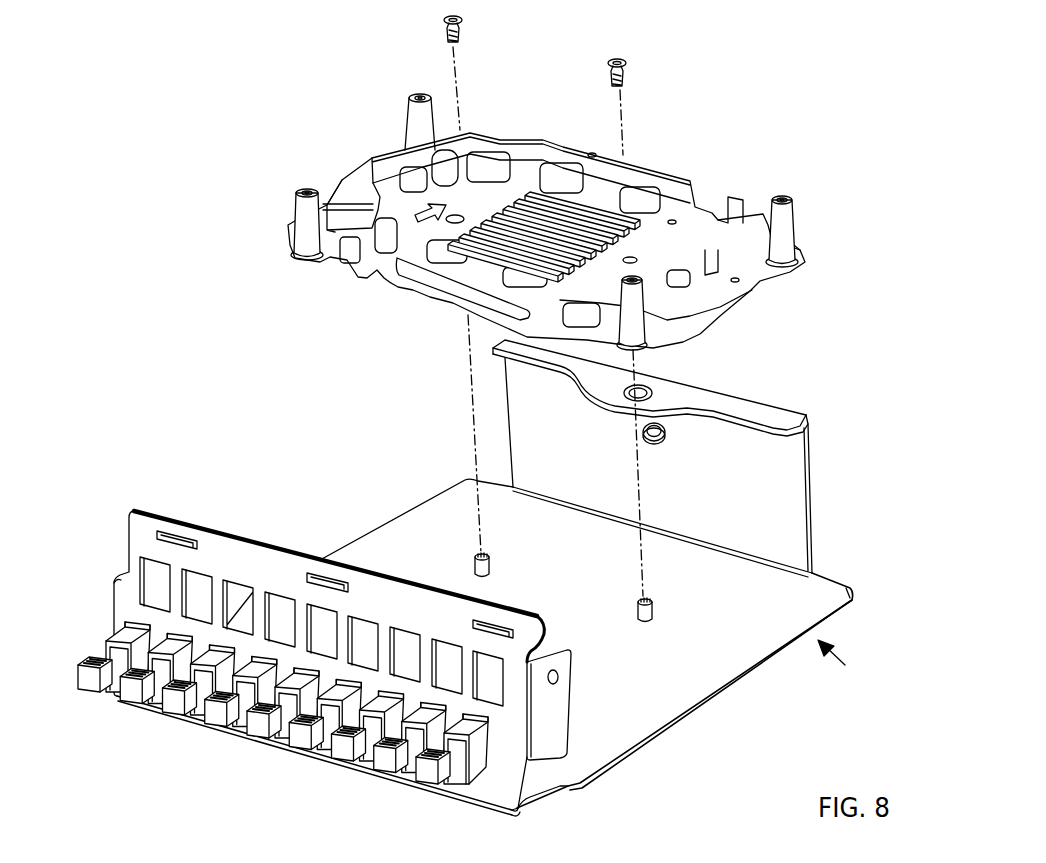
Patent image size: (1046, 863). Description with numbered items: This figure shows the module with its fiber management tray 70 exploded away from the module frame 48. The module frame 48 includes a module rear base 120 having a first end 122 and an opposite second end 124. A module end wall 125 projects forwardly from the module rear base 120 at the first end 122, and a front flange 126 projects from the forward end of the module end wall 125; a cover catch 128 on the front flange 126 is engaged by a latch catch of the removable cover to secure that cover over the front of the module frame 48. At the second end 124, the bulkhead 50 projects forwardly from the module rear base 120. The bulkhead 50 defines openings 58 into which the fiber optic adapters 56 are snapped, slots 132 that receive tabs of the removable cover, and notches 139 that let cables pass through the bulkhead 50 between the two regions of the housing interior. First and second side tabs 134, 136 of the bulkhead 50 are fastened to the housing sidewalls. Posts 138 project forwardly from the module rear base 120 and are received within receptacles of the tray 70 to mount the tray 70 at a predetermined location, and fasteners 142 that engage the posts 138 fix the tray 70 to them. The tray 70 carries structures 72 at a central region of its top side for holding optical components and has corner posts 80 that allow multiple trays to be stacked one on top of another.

The module frame 48 is at (847, 669).
The bulkhead 50 is at (135, 545).
The fiber optic adapters 56 is at (473, 770).
The openings 58 is at (140, 576).
The tray 70 is at (668, 190).
The structures 72 is at (537, 218).
The corner posts 80 is at (410, 100).
The module rear base 120 is at (463, 597).
The first end 122 is at (838, 588).
The second end 124 is at (520, 808).
The module end wall 125 is at (815, 455).
The front flange 126 is at (777, 418).
The cover catch 128 is at (648, 393).
The slots 132 is at (172, 535).
The first side tab 134 is at (115, 585).
The second side tab 136 is at (550, 745).
The posts 138 is at (474, 568).
The notches 139 is at (515, 775).
The fasteners 142 is at (444, 18).